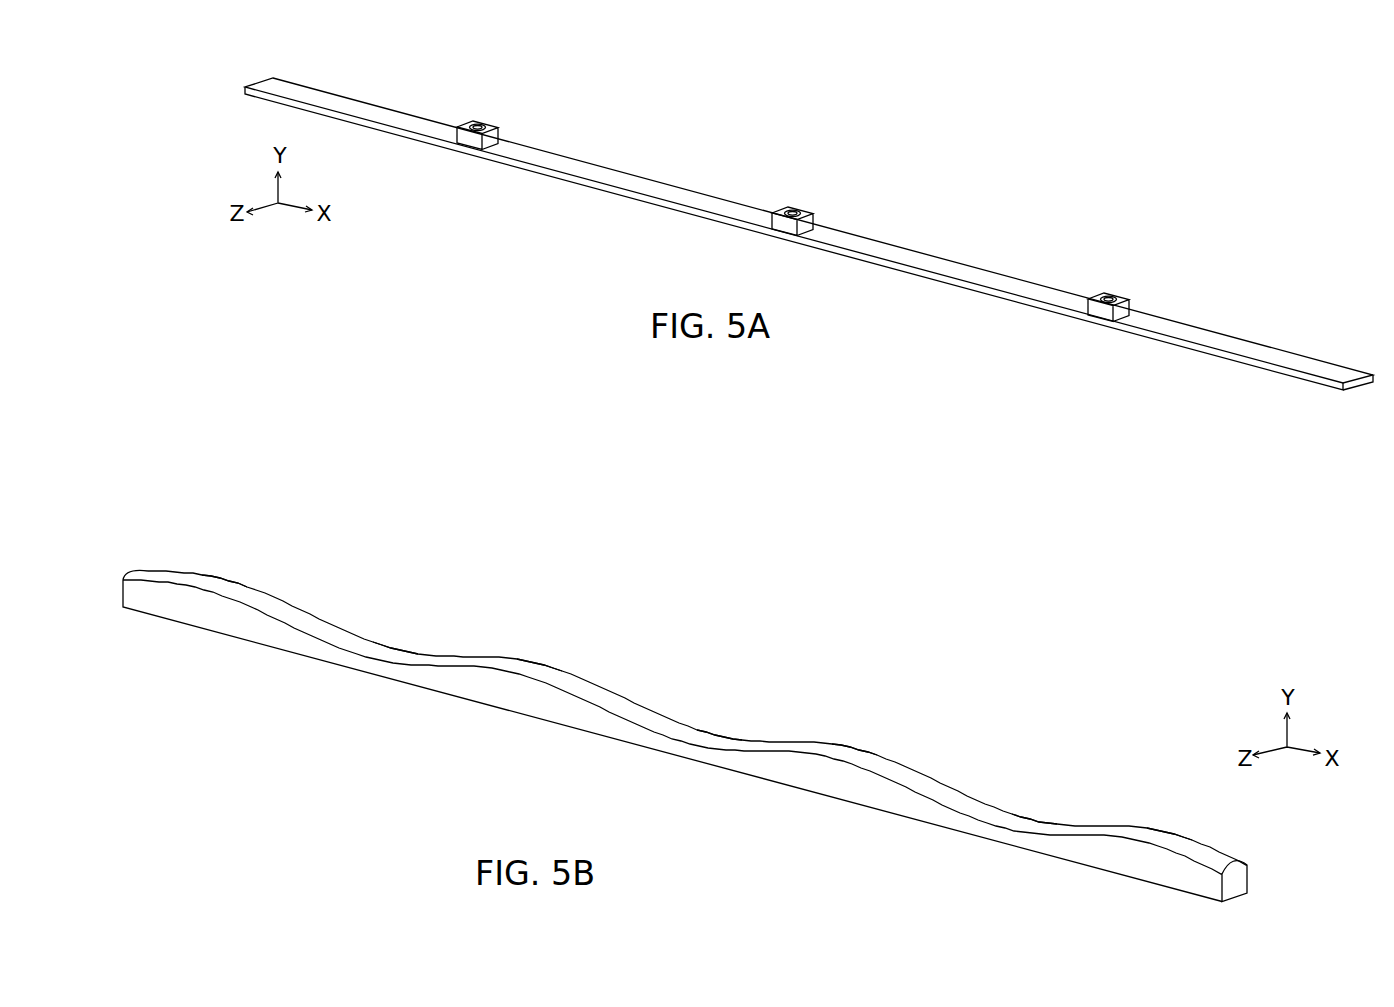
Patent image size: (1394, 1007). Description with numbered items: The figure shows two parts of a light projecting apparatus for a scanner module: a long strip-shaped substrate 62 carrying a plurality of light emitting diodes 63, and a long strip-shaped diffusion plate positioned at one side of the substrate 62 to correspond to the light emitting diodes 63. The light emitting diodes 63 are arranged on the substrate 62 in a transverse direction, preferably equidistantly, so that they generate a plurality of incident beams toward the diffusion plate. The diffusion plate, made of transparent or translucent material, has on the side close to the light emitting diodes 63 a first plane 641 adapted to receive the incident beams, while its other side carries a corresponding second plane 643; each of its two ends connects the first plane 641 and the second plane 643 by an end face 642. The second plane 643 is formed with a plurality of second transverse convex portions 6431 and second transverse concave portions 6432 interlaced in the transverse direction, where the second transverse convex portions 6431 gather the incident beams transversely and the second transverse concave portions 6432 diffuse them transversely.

In FIG. 5A, the substrate 62 is at (598, 173).
In FIG. 5A, the light emitting diode 63 is at (495, 128).
In FIG. 5B, the first plane 641 is at (248, 641).
In FIG. 5B, the end face 642 is at (1246, 882).
In FIG. 5B, the second plane 643 is at (235, 440).
In FIG. 5B, the second transverse convex portion 6431 is at (217, 571).
In FIG. 5B, the second transverse concave portion 6432 is at (363, 631).